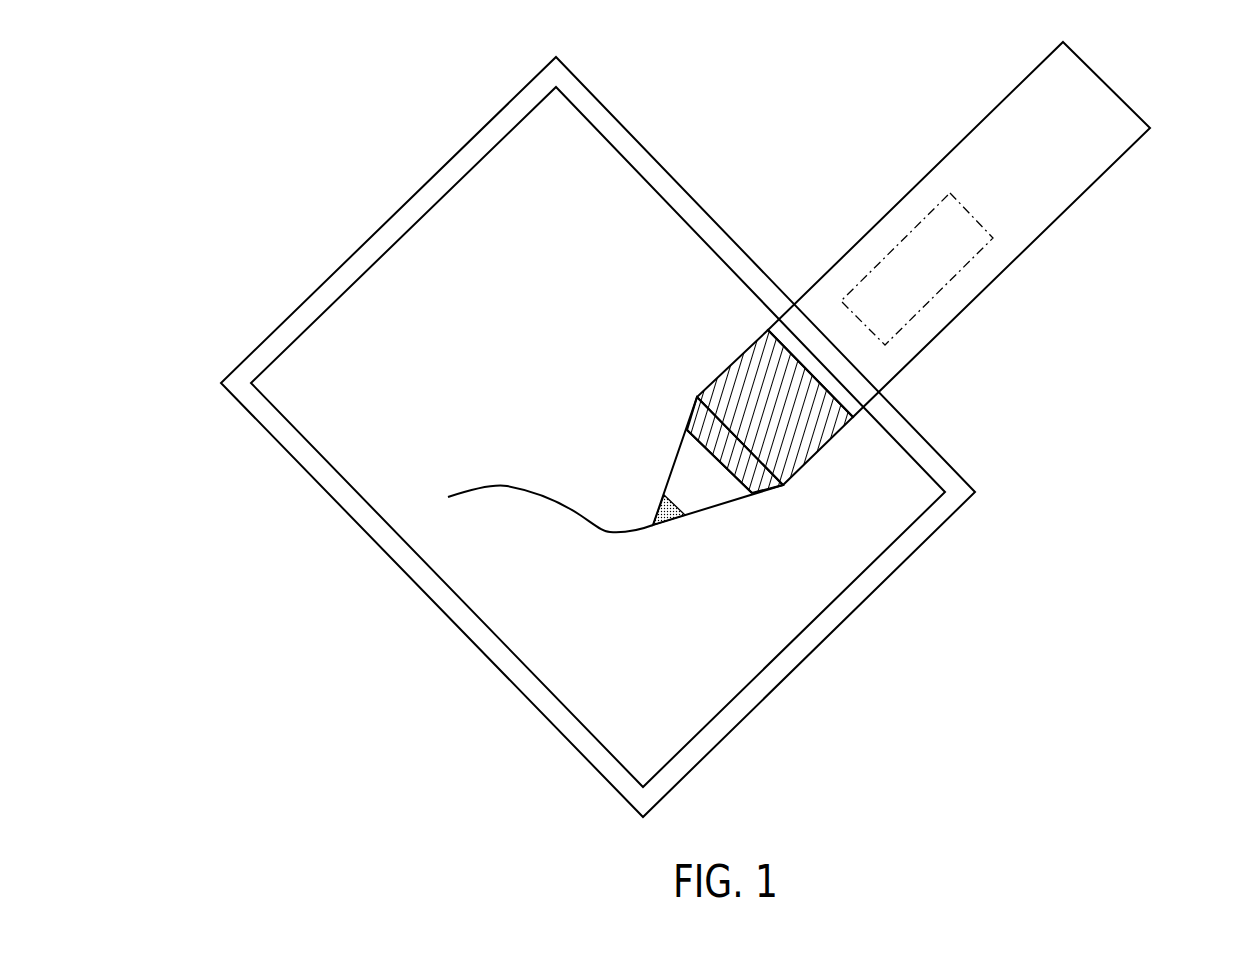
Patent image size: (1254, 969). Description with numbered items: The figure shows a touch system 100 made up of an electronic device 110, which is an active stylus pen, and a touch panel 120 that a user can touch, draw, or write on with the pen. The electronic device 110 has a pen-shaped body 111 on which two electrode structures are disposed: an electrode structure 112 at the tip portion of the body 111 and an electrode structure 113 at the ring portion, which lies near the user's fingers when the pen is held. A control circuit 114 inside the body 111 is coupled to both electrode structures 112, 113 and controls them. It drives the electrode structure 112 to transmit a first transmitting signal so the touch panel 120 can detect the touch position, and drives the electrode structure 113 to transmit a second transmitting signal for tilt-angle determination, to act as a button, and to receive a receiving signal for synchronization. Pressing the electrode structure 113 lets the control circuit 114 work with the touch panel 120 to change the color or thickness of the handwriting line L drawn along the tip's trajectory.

The touch system 100 is at (145, 52).
The electronic device 110 is at (946, 378).
The body 111 is at (1082, 178).
The electrode structure 112 is at (673, 525).
The electrode structure 113 is at (820, 450).
The control circuit 114 is at (947, 284).
The touch panel 120 is at (352, 162).
The handwriting line L is at (610, 532).